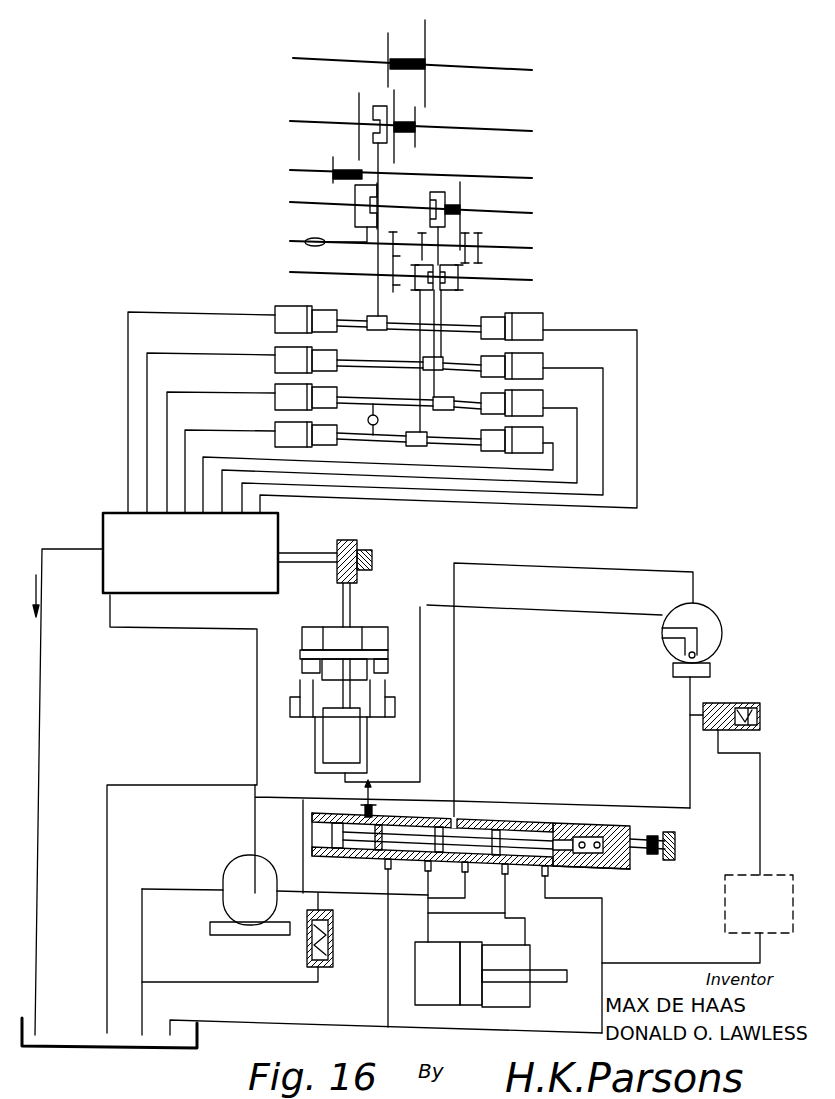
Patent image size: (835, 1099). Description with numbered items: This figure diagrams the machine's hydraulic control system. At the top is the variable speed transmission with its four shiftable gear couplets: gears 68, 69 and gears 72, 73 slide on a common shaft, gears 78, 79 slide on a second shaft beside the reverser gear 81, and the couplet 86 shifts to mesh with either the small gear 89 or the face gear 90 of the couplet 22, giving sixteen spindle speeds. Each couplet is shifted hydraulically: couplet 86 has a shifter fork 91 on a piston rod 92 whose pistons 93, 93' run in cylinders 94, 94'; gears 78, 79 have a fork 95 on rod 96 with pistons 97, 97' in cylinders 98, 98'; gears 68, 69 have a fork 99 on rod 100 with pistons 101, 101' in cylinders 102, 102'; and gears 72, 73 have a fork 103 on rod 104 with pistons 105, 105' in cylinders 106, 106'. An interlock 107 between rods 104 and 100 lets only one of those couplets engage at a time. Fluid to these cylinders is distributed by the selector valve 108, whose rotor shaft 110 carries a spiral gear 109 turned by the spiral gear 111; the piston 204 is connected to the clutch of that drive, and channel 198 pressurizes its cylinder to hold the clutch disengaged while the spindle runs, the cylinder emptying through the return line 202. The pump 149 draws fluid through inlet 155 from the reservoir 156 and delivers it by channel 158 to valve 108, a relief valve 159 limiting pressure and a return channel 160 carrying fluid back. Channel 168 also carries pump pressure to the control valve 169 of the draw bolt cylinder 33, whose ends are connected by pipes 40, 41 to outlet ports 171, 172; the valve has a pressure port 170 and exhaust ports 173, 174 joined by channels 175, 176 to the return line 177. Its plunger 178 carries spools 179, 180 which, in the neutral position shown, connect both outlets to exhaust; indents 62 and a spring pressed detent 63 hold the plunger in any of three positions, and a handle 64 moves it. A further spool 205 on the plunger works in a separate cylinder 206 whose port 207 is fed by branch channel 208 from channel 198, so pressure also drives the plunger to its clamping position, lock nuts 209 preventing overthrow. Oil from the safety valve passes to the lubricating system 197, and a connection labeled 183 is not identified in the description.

The gear couplet 22 is at (405, 58).
The small gear 89 is at (388, 44).
The face gear 90 is at (428, 43).
The shiftable gear couplet 86 is at (406, 133).
The gear 78 is at (447, 192).
The gear 79 is at (462, 184).
The gear 81 is at (355, 213).
The gear 68 is at (377, 292).
The gear 69 is at (416, 291).
The gear 72 is at (444, 292).
The gear 73 is at (460, 291).
The cylinder 94 is at (282, 309).
The piston 93 is at (312, 306).
The shifter fork 91 is at (367, 316).
The piston rod 92 is at (388, 332).
The piston 93' is at (515, 310).
The cylinder 94' is at (540, 316).
The cylinder 98 is at (277, 350).
The piston 97 is at (333, 362).
The shifter fork 95 is at (423, 358).
The piston rod 96 is at (407, 371).
The piston 97' is at (532, 352).
The cylinder 98' is at (540, 362).
The cylinder 106 is at (271, 389).
The piston 105 is at (372, 388).
The shifter fork 103 is at (452, 397).
The piston rod 104 is at (433, 411).
The piston 105' is at (530, 389).
The cylinder 106' is at (547, 397).
The cylinder 102 is at (272, 426).
The piston 101 is at (323, 441).
The interlock 107 is at (368, 420).
The piston rod 100 is at (406, 445).
The shifter fork 99 is at (415, 432).
The piston 101' is at (531, 427).
The cylinder 102' is at (542, 437).
The selector valve 108 is at (280, 519).
The shaft 110 is at (298, 553).
The spiral gear 109 is at (357, 541).
The spiral gear 111 is at (372, 556).
The channel 158 is at (257, 717).
The piston 204 is at (355, 730).
The return channel 160 is at (40, 712).
The return line 202 is at (570, 567).
The channel 198 is at (537, 610).
The relief valve 183 is at (690, 752).
The lubricating system 197 is at (737, 875).
The channel 176 is at (604, 952).
The spool 179 is at (450, 815).
The spool 180 is at (490, 820).
The indents 62 is at (538, 826).
The spring pressed detent 63 is at (583, 832).
The spool 205 is at (337, 850).
The cylinder 206 is at (312, 812).
The port 207 is at (374, 812).
The branch channel 208 is at (364, 807).
The control valve 169 is at (585, 868).
The valve plunger 178 is at (640, 850).
The adjustable lock nuts 209 is at (655, 855).
The handle 64 is at (676, 848).
The exhaust port 174 is at (389, 871).
The outlet port 171 is at (431, 873).
The pressure port 170 is at (468, 873).
The outlet port 172 is at (509, 875).
The exhaust port 173 is at (548, 876).
The channel 168 is at (448, 899).
The channel 175 is at (390, 918).
The pipe 40 is at (430, 926).
The pipe 41 is at (526, 940).
The cylinder 33 is at (505, 1006).
The pump 149 is at (228, 860).
The relief valve 159 is at (333, 935).
The inlet 155 is at (142, 948).
The return line 177 is at (282, 1022).
The reservoir 156 is at (197, 1035).